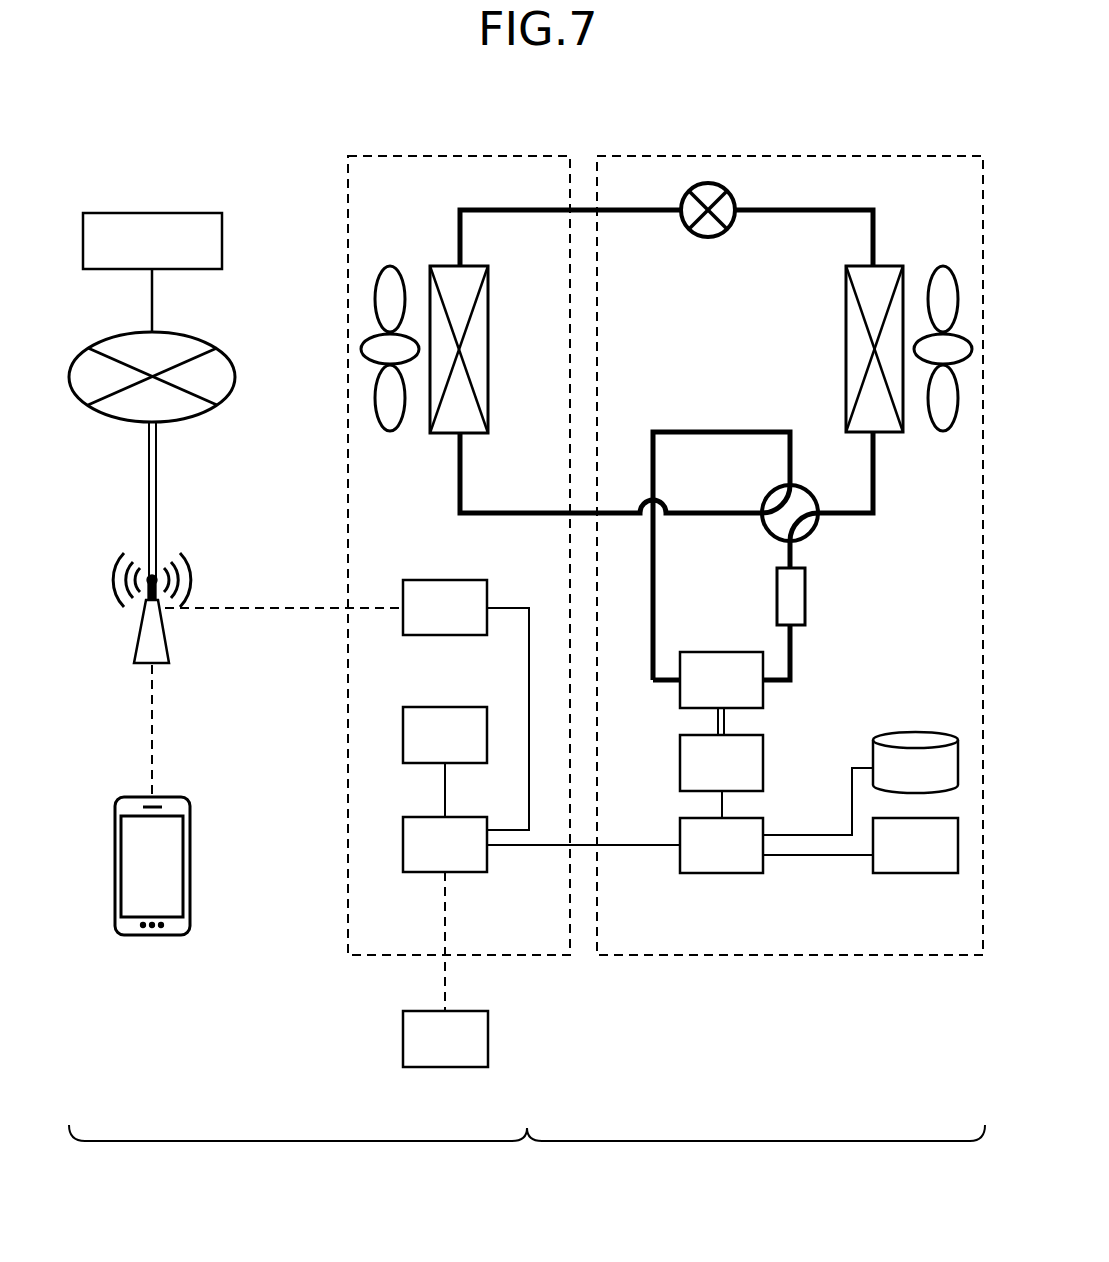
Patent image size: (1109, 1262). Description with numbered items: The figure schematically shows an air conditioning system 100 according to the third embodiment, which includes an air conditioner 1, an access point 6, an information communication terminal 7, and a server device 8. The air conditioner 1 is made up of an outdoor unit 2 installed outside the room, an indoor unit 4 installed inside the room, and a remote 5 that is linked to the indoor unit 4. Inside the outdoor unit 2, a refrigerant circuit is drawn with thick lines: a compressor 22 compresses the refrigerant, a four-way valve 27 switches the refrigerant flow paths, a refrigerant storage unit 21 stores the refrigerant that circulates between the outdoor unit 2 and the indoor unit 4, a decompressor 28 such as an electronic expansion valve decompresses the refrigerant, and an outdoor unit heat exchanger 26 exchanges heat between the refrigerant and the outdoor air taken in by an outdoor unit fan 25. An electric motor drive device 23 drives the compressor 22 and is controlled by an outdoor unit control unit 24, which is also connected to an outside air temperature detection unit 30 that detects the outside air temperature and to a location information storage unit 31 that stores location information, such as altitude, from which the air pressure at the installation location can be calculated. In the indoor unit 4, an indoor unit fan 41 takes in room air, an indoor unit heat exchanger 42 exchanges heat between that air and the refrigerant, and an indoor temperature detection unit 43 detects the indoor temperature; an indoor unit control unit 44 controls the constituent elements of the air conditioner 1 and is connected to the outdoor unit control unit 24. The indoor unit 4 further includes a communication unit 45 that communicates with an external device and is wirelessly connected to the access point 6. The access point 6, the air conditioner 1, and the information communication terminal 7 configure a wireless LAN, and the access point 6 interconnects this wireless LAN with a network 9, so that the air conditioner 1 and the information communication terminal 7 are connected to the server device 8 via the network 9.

The air conditioner 1 is at (880, 135).
The outdoor unit 2 is at (925, 156).
The indoor unit 4 is at (511, 156).
The remote 5 is at (445, 1067).
The access point 6 is at (170, 632).
The information communication terminal 7 is at (190, 848).
The server device 8 is at (222, 236).
The network 9 is at (235, 375).
The refrigerant storage unit 21 is at (805, 598).
The compressor 22 is at (724, 652).
The electric motor drive device 23 is at (763, 764).
The outdoor unit control unit 24 is at (722, 873).
The outdoor unit fan 25 is at (943, 265).
The outdoor unit heat exchanger 26 is at (846, 348).
The four-way valve 27 is at (812, 532).
The decompressor 28 is at (708, 237).
The outside air temperature detection unit 30 is at (918, 873).
The location information storage unit 31 is at (915, 732).
The indoor unit fan 41 is at (390, 265).
The indoor unit heat exchanger 42 is at (488, 351).
The indoor temperature detection unit 43 is at (445, 707).
The indoor unit control unit 44 is at (468, 872).
The communication unit 45 is at (445, 580).
The air conditioning system 100 is at (527, 1155).